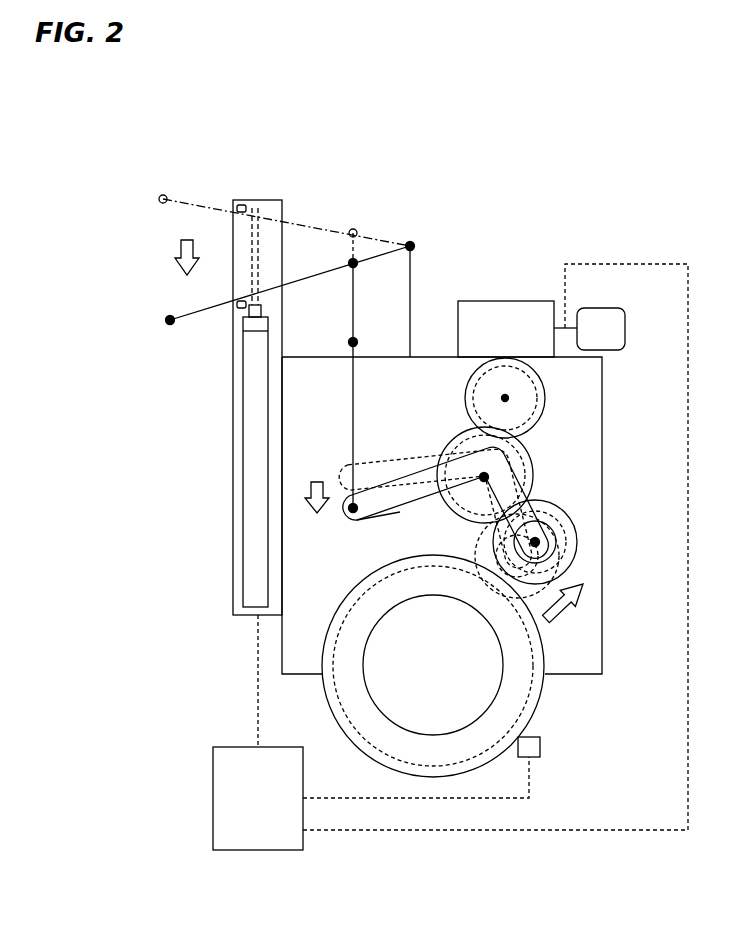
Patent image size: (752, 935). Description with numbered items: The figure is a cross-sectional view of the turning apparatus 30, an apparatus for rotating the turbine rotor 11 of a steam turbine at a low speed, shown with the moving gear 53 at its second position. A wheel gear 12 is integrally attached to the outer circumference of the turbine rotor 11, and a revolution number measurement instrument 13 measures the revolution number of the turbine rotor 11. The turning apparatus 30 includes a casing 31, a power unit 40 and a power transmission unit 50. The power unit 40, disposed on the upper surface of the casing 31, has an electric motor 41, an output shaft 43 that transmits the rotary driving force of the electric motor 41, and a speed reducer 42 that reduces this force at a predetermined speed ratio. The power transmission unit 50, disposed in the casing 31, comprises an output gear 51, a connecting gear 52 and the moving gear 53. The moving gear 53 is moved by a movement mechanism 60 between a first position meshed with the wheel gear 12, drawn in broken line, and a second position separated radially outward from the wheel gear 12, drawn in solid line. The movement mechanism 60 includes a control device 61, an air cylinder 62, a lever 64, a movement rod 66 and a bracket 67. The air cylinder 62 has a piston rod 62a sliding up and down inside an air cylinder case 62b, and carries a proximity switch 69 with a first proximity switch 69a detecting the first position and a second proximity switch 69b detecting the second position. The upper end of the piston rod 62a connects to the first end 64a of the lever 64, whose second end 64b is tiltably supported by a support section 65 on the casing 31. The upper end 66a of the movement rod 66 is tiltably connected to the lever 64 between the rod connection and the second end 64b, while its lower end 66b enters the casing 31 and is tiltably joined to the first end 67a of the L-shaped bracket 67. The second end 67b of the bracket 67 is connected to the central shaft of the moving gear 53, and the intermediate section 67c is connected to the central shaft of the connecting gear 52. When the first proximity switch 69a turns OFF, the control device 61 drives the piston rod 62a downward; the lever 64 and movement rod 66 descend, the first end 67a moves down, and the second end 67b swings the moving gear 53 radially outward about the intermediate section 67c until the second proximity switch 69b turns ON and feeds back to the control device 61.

The turning apparatus 30 is at (654, 116).
The casing 31 is at (604, 524).
The power unit 40 is at (494, 228).
The electric motor 41 is at (624, 330).
The speed reducer 42 is at (504, 318).
The output shaft 43 is at (566, 324).
The power transmission unit 50 is at (560, 409).
The output gear 51 is at (466, 397).
The connecting gear 52 is at (445, 448).
The moving gear 53 is at (562, 508).
The movement mechanism 60 is at (113, 262).
The control device 61 is at (260, 836).
The air cylinder 62 is at (243, 540).
The piston rod 62a is at (237, 310).
The air cylinder case 62b is at (232, 449).
The lever 64 is at (307, 276).
The first end 64a is at (166, 317).
The second end 64b is at (411, 243).
The support section 65 is at (412, 276).
The movement rod 66 is at (352, 388).
The upper end 66a is at (350, 270).
The lower end 66b is at (349, 514).
The bracket 67 is at (397, 512).
The first end 67a is at (365, 522).
The second end 67b is at (541, 545).
The intermediate section 67c is at (488, 477).
The proximity switch 69 is at (172, 246).
The first proximity switch 69a is at (237, 207).
The second proximity switch 69b is at (237, 305).
The turbine rotor 11 is at (485, 700).
The wheel gear 12 is at (512, 683).
The revolution number measurement instrument 13 is at (533, 748).